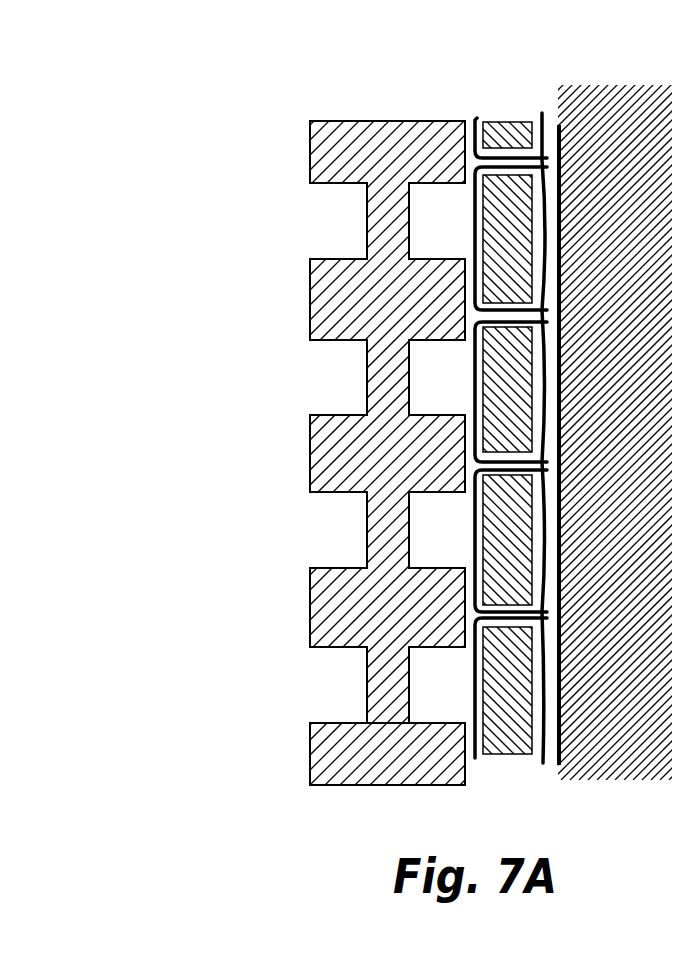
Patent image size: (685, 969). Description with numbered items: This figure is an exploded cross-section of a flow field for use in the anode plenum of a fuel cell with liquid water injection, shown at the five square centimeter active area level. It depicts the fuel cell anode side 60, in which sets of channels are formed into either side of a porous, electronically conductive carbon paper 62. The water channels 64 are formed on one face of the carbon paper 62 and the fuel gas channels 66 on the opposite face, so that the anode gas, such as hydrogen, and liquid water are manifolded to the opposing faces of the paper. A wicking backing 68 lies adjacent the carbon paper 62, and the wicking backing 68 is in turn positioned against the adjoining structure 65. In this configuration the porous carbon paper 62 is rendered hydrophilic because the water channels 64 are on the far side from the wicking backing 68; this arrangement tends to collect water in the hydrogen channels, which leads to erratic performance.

The fuel cell anode side 60 is at (281, 216).
The porous, electronically conductive carbon paper 62 is at (335, 751).
The water channels 64 is at (339, 376).
The fuel gas channels 66 is at (433, 535).
The wicking backing 68 is at (502, 122).
The wall 65 is at (633, 403).